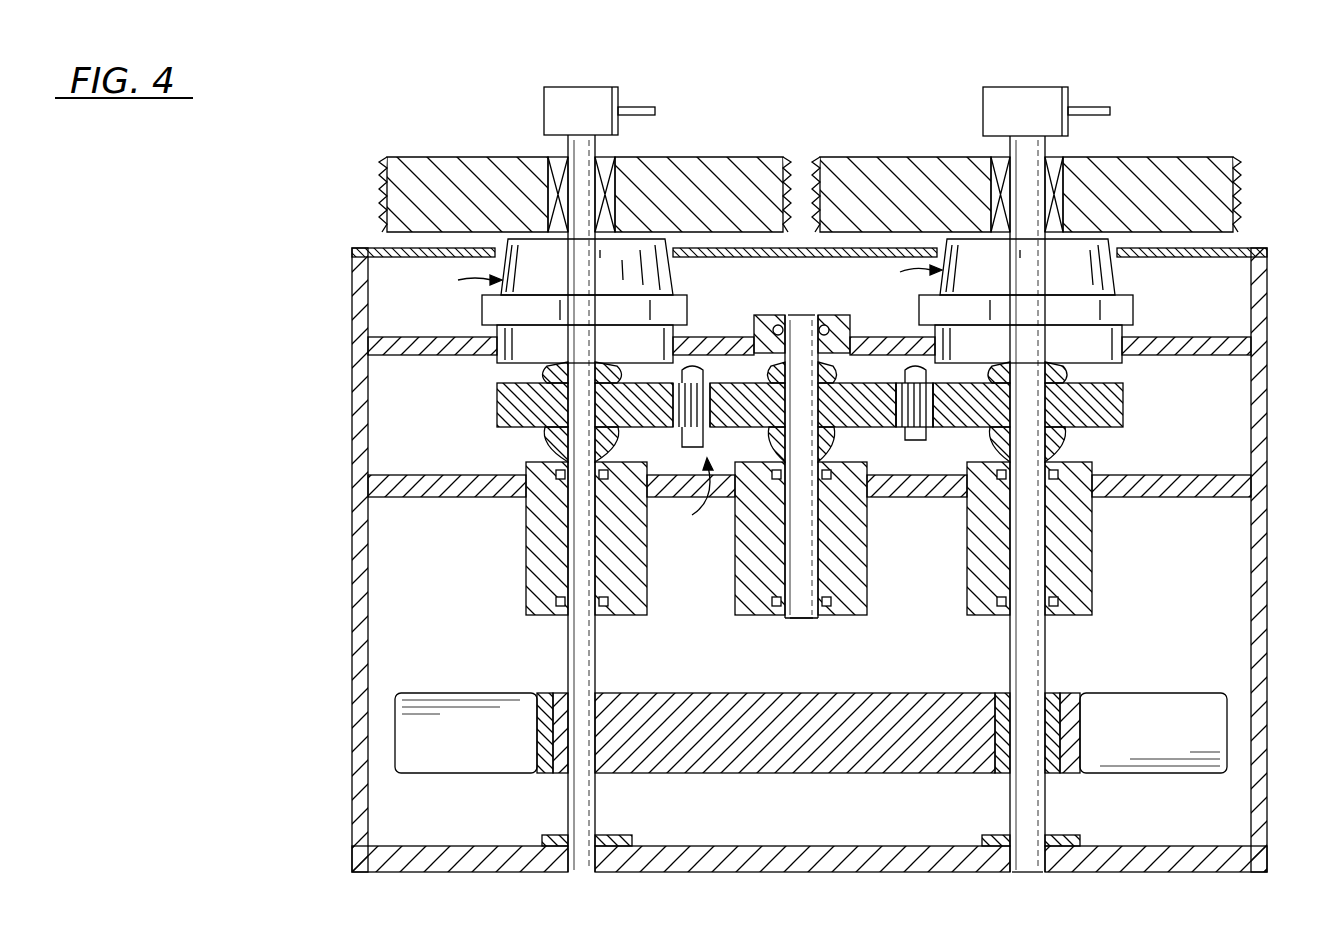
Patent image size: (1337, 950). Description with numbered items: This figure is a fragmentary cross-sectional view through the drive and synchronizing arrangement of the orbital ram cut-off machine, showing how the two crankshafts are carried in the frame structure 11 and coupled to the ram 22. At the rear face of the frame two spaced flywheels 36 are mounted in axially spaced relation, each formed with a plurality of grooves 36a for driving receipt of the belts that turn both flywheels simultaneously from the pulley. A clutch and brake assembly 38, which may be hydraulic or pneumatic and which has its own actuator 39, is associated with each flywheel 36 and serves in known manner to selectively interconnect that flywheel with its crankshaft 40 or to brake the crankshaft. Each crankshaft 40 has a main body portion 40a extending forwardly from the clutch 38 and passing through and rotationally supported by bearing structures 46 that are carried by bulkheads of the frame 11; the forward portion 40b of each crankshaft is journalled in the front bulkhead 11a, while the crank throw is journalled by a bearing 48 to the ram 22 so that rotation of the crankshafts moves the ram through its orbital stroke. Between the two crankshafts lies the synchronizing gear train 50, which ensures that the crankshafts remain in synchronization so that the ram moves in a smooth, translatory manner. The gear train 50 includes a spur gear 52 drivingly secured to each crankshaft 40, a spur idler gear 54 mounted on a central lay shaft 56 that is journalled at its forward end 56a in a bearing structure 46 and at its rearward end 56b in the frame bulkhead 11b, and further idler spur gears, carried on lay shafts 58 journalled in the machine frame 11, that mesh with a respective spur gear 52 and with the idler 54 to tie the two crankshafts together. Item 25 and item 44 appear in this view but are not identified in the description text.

The frame structure 11 is at (1268, 422).
The front bulkhead 11a is at (765, 850).
The frame bulkhead 11b is at (716, 337).
The ram 22 is at (437, 707).
The shaft 25 is at (568, 660).
The flywheel 36 is at (452, 180).
The grooves 36a is at (380, 176).
The clutch and brake assembly 38 is at (556, 92).
The actuator 39 is at (670, 268).
The crankshaft 40 is at (1055, 664).
The main body portion 40a is at (1030, 548).
The forward portion 40b is at (1028, 873).
The drum 44 is at (1135, 305).
The bearing structure 46 is at (1075, 582).
The bearing 48 is at (1005, 692).
The gear train 50 is at (694, 499).
The spur gear 52 is at (1123, 408).
The spur idler gear 54 is at (876, 428).
The lay shaft 56 is at (788, 448).
The forward end 56a is at (802, 620).
The rearward end 56b is at (802, 313).
The lay shafts 58 is at (696, 452).